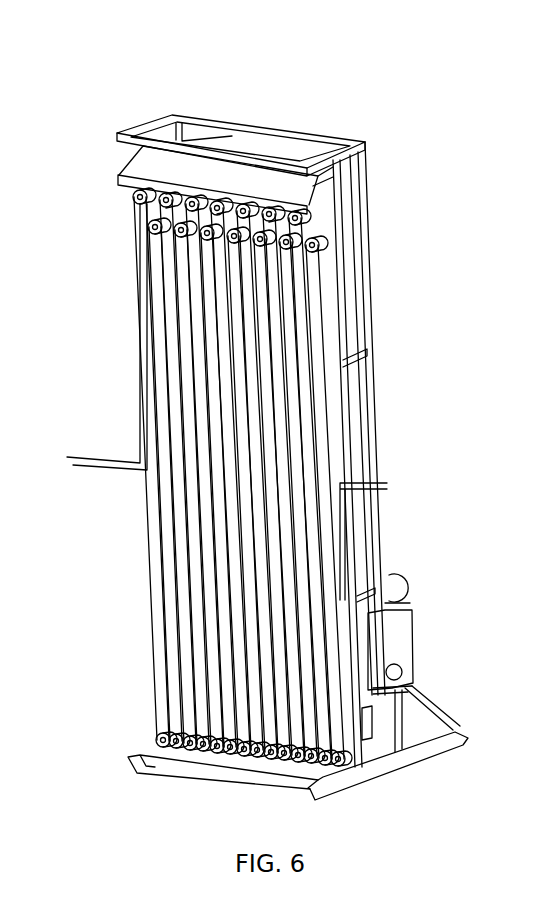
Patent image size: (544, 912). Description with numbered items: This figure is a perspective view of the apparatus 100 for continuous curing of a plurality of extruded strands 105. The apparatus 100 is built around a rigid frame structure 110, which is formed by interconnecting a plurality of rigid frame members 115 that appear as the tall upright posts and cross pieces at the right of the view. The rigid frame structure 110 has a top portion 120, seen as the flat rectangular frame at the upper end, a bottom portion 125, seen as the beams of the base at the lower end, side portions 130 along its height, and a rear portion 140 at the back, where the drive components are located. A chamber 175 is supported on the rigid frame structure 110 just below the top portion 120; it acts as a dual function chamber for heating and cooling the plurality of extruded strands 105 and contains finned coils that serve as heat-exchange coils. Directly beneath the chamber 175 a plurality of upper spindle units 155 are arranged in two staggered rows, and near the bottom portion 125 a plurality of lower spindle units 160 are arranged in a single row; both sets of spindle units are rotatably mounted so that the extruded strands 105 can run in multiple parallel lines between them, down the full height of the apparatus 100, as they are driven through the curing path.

The apparatus 100 is at (125, 113).
The extruded strands 105 is at (162, 432).
The rigid frame structure 110 is at (376, 380).
The rigid frame members 115 is at (335, 272).
The top portion 120 is at (325, 133).
The bottom portion 125 is at (242, 782).
The side portions 130 is at (380, 462).
The rear portion 140 is at (418, 610).
The upper spindle units 155 is at (150, 236).
The lower spindle units 160 is at (160, 740).
The chamber 175 is at (163, 168).